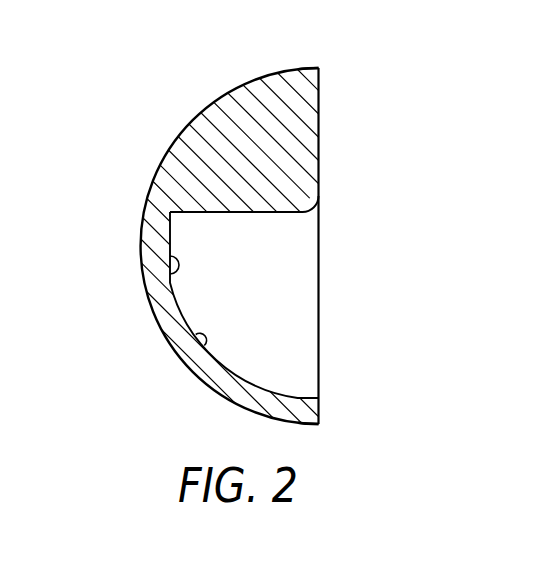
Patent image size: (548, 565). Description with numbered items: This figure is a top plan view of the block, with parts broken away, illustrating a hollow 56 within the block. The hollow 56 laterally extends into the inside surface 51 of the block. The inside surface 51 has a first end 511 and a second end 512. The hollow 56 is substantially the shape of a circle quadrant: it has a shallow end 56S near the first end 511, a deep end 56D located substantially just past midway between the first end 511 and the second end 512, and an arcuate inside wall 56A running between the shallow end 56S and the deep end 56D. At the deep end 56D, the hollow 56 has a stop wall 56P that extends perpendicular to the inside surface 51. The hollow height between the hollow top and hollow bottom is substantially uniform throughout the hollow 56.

The inside surface 51 is at (319, 125).
The first end 511 is at (298, 426).
The second end 512 is at (318, 67).
The hollow 56 is at (302, 286).
The stop wall 56P is at (277, 212).
The shallow end 56S is at (297, 398).
The deep end 56D is at (181, 265).
The arcuate inside wall 56A is at (205, 342).